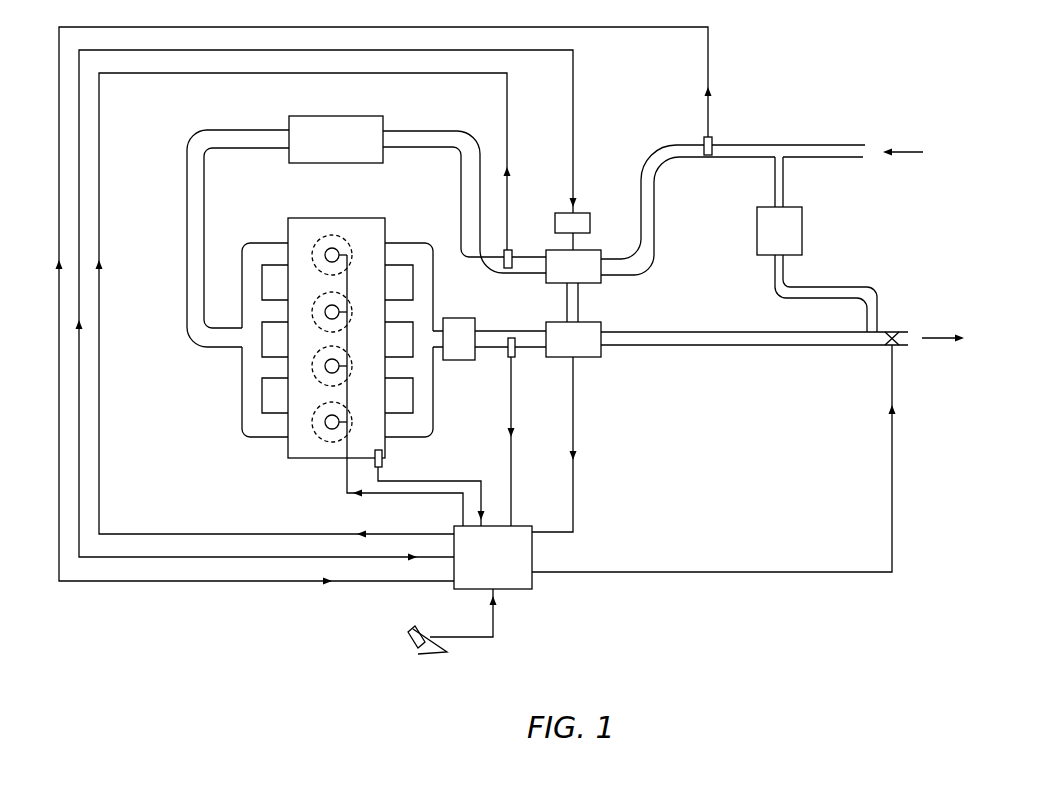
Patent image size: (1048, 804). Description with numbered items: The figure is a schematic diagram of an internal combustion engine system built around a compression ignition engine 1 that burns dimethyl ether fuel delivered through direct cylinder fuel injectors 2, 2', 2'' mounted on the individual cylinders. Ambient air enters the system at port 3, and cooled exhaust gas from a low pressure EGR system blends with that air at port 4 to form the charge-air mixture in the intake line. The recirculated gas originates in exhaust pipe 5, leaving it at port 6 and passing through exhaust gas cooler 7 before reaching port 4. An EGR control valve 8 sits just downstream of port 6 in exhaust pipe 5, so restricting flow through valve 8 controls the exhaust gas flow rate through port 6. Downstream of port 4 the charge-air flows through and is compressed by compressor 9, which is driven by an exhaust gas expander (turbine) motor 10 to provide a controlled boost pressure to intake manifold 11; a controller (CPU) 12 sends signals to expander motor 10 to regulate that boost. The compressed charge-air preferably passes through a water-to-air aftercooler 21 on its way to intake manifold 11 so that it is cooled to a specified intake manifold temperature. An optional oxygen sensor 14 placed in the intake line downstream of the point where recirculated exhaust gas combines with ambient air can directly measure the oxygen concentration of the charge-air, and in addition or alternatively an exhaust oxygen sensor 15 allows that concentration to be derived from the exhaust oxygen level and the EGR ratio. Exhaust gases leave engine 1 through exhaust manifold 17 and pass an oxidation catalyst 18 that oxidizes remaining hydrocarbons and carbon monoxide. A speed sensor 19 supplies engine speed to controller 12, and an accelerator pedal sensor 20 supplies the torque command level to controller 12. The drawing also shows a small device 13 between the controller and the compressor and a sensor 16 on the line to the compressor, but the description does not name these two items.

The compression ignition engine 1 is at (333, 462).
The direct cylinder fuel injector 2 is at (337, 344).
The direct cylinder fuel injector 2' is at (356, 274).
The direct cylinder fuel injector 2'' is at (324, 434).
The port 3 is at (865, 151).
The port 4 is at (780, 157).
The exhaust pipe 5 is at (718, 346).
The port 6 is at (877, 328).
The exhaust gas cooler 7 is at (770, 231).
The EGR control valve 8 is at (893, 330).
The compressor 9 is at (555, 253).
The exhaust gas expander (turbine) motor 10 is at (590, 343).
The intake manifold 11 is at (248, 290).
The controller (CPU) 12 is at (523, 535).
The compressor control actuator 13 is at (558, 218).
The oxygen sensor 14 is at (704, 140).
The exhaust oxygen sensor 15 is at (512, 358).
The intake pressure sensor 16 is at (505, 256).
The exhaust manifold 17 is at (424, 262).
The oxidation catalyst 18 is at (461, 324).
The speed sensor 19 is at (381, 467).
The accelerator pedal sensor 20 is at (410, 641).
The water-to-air aftercooler 21 is at (366, 231).